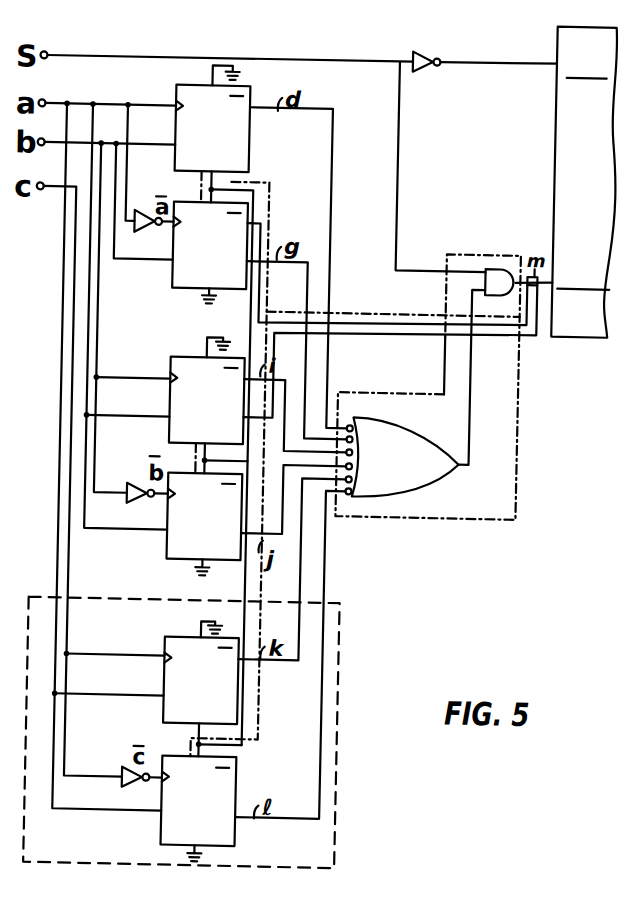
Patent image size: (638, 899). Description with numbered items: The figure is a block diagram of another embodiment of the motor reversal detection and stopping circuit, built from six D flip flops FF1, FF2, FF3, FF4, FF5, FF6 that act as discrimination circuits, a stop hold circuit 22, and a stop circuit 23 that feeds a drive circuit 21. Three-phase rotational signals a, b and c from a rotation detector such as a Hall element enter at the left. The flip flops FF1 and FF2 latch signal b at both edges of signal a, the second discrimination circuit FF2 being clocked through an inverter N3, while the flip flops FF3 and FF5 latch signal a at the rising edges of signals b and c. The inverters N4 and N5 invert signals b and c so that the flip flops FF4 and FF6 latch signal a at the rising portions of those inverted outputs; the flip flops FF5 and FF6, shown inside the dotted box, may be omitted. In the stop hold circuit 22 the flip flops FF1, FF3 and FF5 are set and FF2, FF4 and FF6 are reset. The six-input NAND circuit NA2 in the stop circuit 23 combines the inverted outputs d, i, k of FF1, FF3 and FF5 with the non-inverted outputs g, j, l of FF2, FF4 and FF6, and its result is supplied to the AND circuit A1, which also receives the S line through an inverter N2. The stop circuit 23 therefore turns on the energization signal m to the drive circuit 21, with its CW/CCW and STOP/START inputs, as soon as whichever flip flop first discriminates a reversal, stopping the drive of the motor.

The drive circuit 21 is at (585, 326).
The stop hold circuit 22 is at (386, 316).
The stop circuit 23 is at (456, 246).
The D flip flop FF1 is at (252, 134).
The D flip flop FF2 is at (176, 264).
The D flip flop FF3 is at (176, 362).
The D flip flop FF4 is at (176, 550).
The D flip flop FF5 is at (176, 642).
The D flip flop FF6 is at (176, 829).
The inverter N2 is at (423, 48).
The inverter N3 is at (146, 231).
The inverter N4 is at (128, 488).
The inverter N5 is at (124, 770).
The AND circuit A1 is at (489, 273).
The 6-input NAND circuit NA2 is at (440, 484).